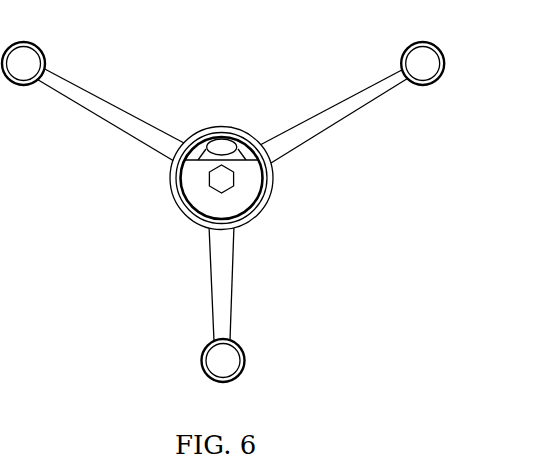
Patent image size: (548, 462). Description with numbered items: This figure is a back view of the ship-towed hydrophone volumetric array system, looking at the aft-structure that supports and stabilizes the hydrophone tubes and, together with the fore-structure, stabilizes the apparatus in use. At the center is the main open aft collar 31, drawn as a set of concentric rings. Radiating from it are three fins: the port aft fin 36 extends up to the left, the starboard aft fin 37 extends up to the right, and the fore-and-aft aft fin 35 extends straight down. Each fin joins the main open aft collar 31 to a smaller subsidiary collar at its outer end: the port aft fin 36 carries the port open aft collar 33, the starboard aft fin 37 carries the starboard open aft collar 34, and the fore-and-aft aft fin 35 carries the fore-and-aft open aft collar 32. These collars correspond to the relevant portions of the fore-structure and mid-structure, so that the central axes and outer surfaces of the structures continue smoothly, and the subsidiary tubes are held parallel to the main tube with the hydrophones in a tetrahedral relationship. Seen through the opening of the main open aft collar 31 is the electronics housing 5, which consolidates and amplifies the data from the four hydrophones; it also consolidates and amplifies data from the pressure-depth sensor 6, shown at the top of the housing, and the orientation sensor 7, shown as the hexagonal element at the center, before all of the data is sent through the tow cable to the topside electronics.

The electronics housing 5 is at (225, 202).
The pressure-depth sensor 6 is at (216, 147).
The orientation sensor 7 is at (217, 183).
The main open aft collar 31 is at (270, 193).
The fore-and-aft open aft collar 32 is at (201, 361).
The port open aft collar 33 is at (44, 57).
The starboard open aft collar 34 is at (401, 62).
The fore-and-aft aft fin 35 is at (223, 278).
The port aft fin 36 is at (105, 116).
The starboard aft fin 37 is at (335, 118).